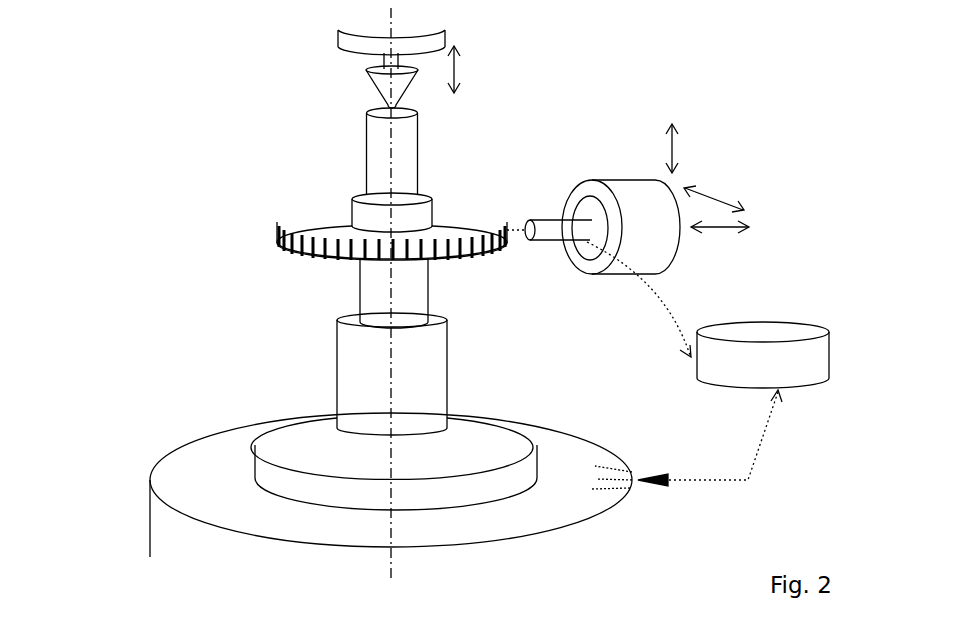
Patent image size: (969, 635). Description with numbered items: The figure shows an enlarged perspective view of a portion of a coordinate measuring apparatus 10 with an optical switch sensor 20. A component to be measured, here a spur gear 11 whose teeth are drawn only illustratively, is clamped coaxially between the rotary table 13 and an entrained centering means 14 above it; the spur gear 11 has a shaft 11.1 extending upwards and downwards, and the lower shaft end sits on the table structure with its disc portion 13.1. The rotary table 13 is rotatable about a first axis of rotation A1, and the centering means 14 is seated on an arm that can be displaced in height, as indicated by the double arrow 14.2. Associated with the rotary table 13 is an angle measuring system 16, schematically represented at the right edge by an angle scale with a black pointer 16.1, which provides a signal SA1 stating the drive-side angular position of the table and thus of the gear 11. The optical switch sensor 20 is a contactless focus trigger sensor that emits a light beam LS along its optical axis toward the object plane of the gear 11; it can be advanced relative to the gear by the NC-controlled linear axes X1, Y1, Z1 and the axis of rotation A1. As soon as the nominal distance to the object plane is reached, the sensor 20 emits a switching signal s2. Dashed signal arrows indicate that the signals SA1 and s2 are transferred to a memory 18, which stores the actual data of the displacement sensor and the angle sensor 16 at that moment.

The coordinate measuring apparatus 10 is at (82, 107).
The spur gear 11 is at (310, 215).
The shaft 11.1 is at (367, 152).
The rotary table 13 is at (353, 383).
The rotary table disc 13.1 is at (300, 443).
The entrained centering means 14 is at (368, 77).
The double arrow 14.2 is at (460, 68).
The angle measuring system 16 is at (642, 457).
The black pointer 16.1 is at (655, 484).
The memory 18 is at (780, 382).
The optical switch sensor 20 is at (543, 211).
The light beam LS is at (516, 240).
The axis of rotation A1 is at (388, 308).
The linear axis Z1 is at (678, 140).
The linear axis X1 is at (716, 200).
The linear axis Y1 is at (720, 234).
The switching signal s2 is at (639, 312).
The signal SA1 is at (734, 438).